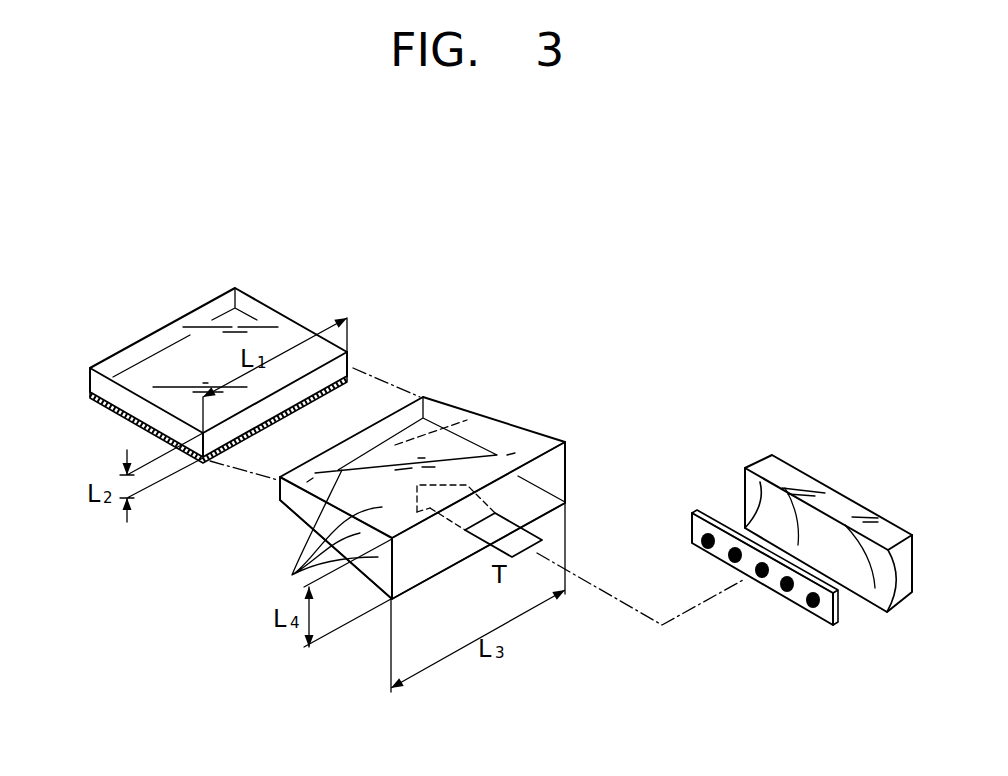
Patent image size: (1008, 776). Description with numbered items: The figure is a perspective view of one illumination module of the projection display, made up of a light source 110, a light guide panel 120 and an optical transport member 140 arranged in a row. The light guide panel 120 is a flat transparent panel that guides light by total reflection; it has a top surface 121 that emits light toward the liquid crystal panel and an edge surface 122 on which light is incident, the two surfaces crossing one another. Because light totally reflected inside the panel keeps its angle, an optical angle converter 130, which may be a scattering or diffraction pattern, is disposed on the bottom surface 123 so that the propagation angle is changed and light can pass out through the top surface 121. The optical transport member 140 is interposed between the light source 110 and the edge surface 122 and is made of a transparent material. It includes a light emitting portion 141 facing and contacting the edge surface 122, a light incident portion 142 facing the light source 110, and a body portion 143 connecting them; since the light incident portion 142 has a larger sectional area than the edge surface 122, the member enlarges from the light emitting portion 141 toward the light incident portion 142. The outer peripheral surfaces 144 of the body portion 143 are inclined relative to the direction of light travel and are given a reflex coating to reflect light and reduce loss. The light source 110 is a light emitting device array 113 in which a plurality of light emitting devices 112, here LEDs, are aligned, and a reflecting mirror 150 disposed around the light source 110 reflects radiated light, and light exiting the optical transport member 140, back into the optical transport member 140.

The light source 110 is at (722, 577).
The light emitting devices 112 is at (700, 542).
The light emitting device array 113 is at (692, 516).
The light guide panel 120 is at (276, 343).
The top surface 121 is at (257, 310).
The edge surface 122 is at (353, 367).
The bottom surface 123 is at (137, 377).
The optical angle converter 130 is at (113, 406).
The optical transport member 140 is at (447, 492).
The light emitting portion 141 is at (278, 482).
The light incident portion 142 is at (423, 573).
The body portion 143 is at (517, 426).
The outer peripheral surfaces 144 is at (311, 534).
The reflecting mirror 150 is at (836, 497).